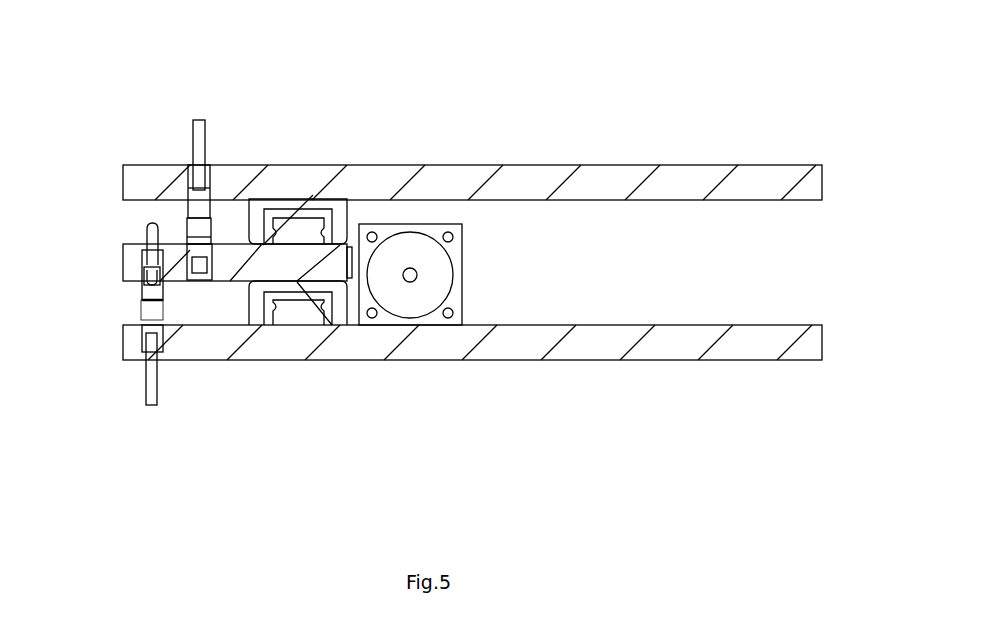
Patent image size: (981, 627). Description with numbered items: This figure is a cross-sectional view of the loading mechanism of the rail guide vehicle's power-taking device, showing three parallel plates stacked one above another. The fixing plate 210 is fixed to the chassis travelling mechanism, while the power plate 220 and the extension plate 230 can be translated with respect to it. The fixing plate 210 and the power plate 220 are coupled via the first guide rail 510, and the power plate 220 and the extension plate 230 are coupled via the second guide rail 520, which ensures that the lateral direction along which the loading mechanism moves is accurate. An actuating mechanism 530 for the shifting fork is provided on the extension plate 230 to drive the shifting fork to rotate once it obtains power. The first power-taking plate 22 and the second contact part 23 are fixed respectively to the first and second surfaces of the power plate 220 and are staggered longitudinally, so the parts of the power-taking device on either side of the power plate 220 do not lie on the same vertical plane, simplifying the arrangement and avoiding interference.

The fixing plate 210 is at (673, 183).
The power plate 220 is at (125, 260).
The extension plate 230 is at (665, 350).
The first guide rail 510 is at (270, 238).
The second guide rail 520 is at (333, 323).
The actuating mechanism for the shifting fork 530 is at (410, 257).
The first power-taking plate 22 is at (192, 243).
The second contact part 23 is at (140, 288).